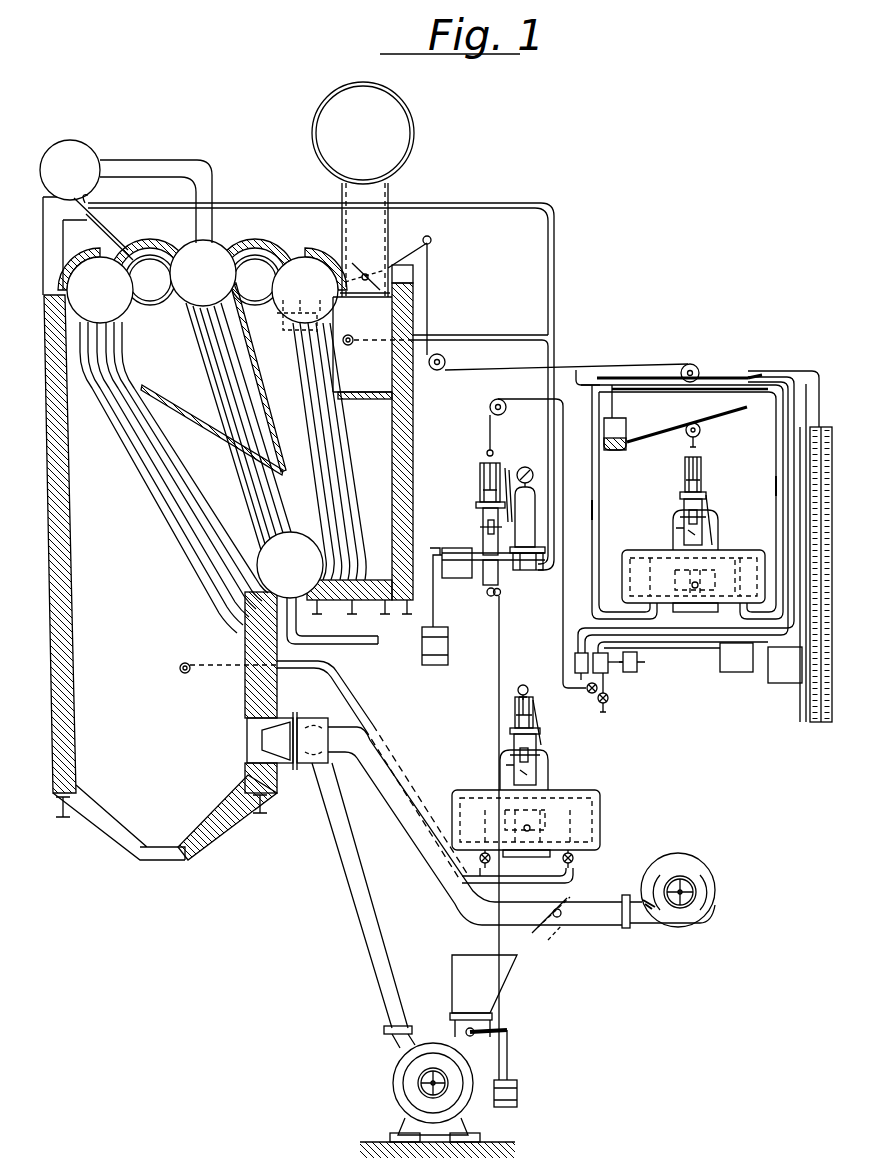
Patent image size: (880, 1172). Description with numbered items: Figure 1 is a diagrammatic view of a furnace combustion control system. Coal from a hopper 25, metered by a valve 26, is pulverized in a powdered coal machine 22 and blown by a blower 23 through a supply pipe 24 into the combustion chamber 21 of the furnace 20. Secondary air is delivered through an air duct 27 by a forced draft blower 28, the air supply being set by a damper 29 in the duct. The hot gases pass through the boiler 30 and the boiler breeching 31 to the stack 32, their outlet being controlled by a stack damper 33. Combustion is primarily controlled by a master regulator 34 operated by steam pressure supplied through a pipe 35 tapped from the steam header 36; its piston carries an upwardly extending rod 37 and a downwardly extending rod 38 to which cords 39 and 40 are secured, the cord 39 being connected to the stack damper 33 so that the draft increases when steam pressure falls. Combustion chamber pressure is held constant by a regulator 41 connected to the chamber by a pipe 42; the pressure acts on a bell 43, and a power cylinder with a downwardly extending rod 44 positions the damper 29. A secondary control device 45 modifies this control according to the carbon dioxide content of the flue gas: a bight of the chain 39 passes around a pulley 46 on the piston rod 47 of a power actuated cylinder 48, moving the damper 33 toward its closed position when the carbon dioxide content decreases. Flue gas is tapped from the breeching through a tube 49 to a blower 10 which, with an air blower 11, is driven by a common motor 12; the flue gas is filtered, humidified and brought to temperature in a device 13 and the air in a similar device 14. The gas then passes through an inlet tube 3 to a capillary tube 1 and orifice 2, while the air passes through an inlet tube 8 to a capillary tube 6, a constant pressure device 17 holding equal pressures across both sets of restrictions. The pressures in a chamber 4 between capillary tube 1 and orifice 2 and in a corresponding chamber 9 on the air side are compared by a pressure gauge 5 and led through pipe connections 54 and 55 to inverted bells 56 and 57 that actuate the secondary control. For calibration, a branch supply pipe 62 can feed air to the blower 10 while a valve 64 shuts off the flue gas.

The capillary tube 1 is at (708, 364).
The orifice 2 is at (576, 370).
The inlet tube 3 is at (760, 374).
The chamber 4 is at (600, 378).
The pressure gauge 5 is at (656, 432).
The capillary tube 6 is at (735, 375).
The inlet tube 8 is at (778, 380).
The chamber 9 is at (618, 388).
The blower 10 is at (608, 668).
The blower 11 is at (576, 650).
The motor 12 is at (637, 662).
The device 13 is at (785, 665).
The device 14 is at (736, 657).
The constant pressure device 17 is at (808, 508).
The furnace 20 is at (130, 532).
The combustion chamber 21 is at (190, 786).
The powdered coal machine 22 is at (478, 1065).
The blower 23 is at (414, 1082).
The supply pipe 24 is at (338, 815).
The hopper 25 is at (483, 996).
The valve 26 is at (452, 1030).
The air duct 27 is at (426, 842).
The forced draft blower 28 is at (672, 918).
The damper 29 is at (565, 922).
The boiler 30 is at (218, 441).
The boiler breeching 31 is at (373, 348).
The stack 32 is at (414, 133).
The stack damper 33 is at (357, 262).
The master regulator 34 is at (444, 530).
The pipe 35 is at (546, 230).
The steam header 36 is at (92, 145).
The upwardly extending rod 37 is at (486, 452).
The downwardly extending rod 38 is at (502, 595).
The chain or cord 39 is at (545, 402).
The chain or cord 40 is at (495, 652).
The regulator 41 is at (444, 770).
The pipe 42 is at (348, 690).
The bell 43 is at (558, 800).
The downwardly extending rod 44 is at (574, 880).
The secondary control device 45 is at (744, 473).
The pulley 46 is at (688, 440).
The piston rod 47 is at (700, 450).
The power actuated cylinder 48 is at (690, 480).
The tube 49 is at (486, 334).
The pipe connection 54 is at (597, 510).
The pipe connection 55 is at (778, 486).
The inverted bell 56 is at (650, 550).
The inverted bell 57 is at (745, 550).
The branch supply pipe 62 is at (608, 700).
The valve 64 is at (590, 693).